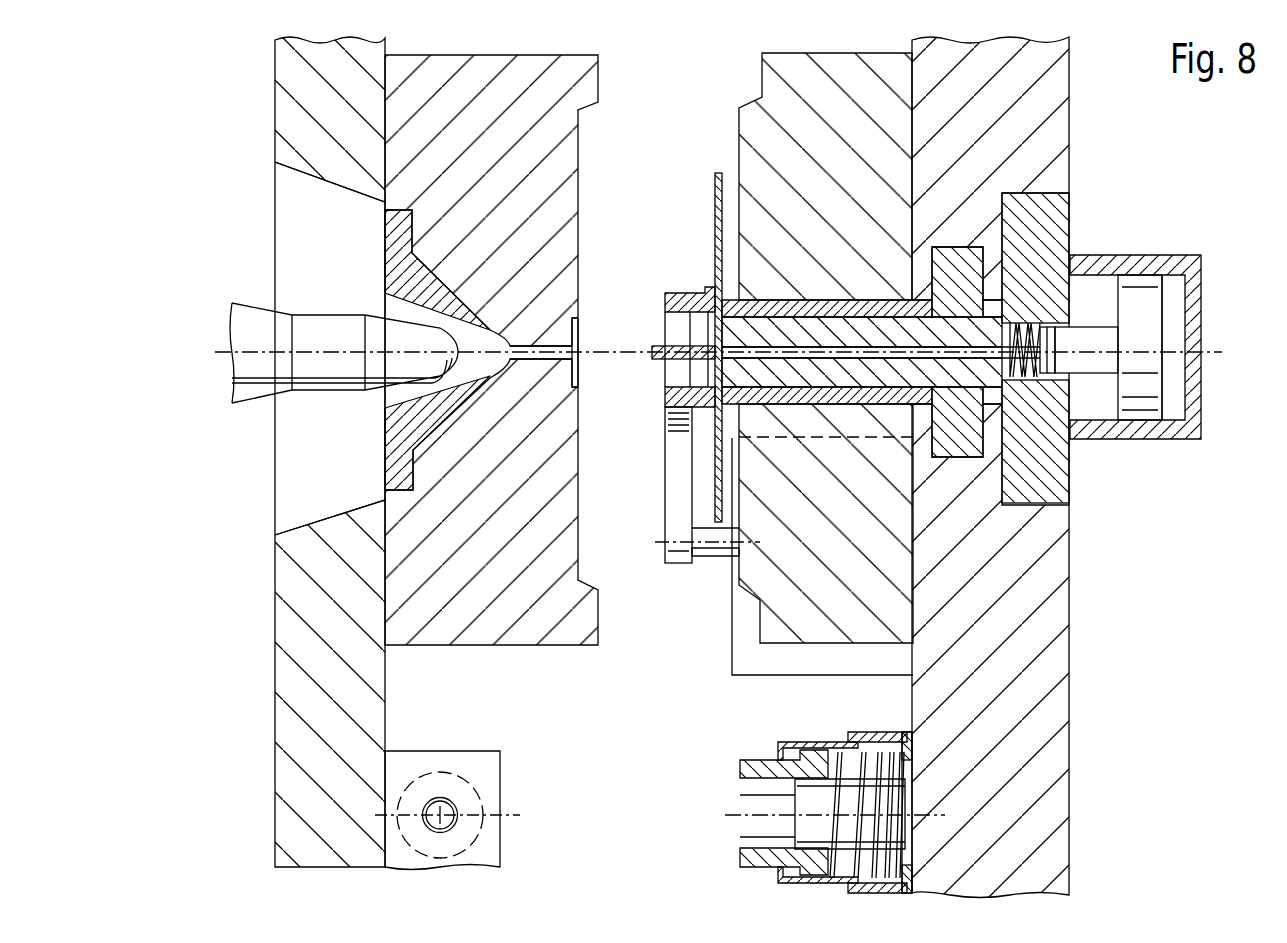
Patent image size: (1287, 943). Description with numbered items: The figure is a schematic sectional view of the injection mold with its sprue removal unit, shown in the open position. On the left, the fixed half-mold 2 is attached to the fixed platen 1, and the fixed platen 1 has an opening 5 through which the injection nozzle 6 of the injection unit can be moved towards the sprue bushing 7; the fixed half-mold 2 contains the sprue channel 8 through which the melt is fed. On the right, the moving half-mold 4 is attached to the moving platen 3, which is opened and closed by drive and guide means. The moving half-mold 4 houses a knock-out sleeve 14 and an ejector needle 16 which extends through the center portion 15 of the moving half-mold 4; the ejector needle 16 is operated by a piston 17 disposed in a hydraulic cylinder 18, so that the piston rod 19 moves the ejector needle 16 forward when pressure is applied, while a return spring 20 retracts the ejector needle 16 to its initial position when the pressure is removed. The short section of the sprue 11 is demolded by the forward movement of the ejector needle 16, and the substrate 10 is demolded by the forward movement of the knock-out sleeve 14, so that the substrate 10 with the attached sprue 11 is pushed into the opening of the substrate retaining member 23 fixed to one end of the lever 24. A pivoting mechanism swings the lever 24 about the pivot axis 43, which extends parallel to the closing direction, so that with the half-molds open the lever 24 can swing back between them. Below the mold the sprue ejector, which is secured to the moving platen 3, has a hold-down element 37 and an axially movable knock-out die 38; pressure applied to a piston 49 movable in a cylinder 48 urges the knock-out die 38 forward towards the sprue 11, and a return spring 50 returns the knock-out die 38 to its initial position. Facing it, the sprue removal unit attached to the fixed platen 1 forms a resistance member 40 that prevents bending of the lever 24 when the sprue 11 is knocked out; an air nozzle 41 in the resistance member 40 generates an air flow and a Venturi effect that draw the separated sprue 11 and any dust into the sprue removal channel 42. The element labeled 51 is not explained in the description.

The fixed platen 1 is at (290, 68).
The fixed half-mold 2 is at (573, 75).
The moving platen 3 is at (1045, 62).
The moving half-mold 4 is at (772, 77).
The opening 5 is at (300, 236).
The injection nozzle 6 is at (250, 327).
The sprue bushing 7 is at (427, 417).
The sprue channel 8 is at (562, 370).
The substrate 10 is at (712, 178).
The sprue 11 is at (672, 340).
The knock-out sleeve 14 is at (836, 300).
The center portion 15 is at (788, 370).
The ejector needle 16 is at (862, 358).
The piston 17 is at (1150, 390).
The hydraulic cylinder 18 is at (1172, 253).
The piston rod 19 is at (1097, 362).
The return spring 20 is at (1016, 332).
The substrate retaining member 23 is at (690, 292).
The lever 24 is at (668, 425).
The hold-down element 37 is at (745, 768).
The knock-out die 38 is at (745, 825).
The resistance member 40 is at (473, 765).
The air nozzle 41 is at (450, 818).
The sprue removal channel 42 is at (440, 815).
The pivot axis 43 is at (652, 545).
The cylinder 48 is at (868, 733).
The piston 49 is at (905, 733).
The return spring 50 is at (840, 748).
The cover plate 51 is at (742, 655).